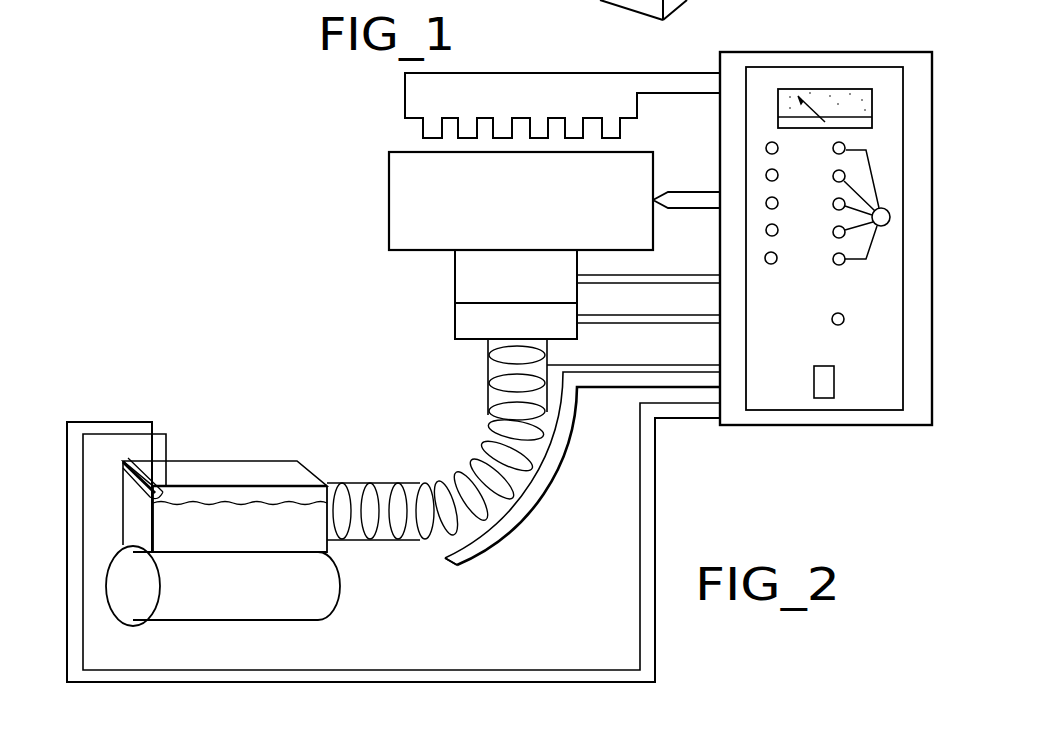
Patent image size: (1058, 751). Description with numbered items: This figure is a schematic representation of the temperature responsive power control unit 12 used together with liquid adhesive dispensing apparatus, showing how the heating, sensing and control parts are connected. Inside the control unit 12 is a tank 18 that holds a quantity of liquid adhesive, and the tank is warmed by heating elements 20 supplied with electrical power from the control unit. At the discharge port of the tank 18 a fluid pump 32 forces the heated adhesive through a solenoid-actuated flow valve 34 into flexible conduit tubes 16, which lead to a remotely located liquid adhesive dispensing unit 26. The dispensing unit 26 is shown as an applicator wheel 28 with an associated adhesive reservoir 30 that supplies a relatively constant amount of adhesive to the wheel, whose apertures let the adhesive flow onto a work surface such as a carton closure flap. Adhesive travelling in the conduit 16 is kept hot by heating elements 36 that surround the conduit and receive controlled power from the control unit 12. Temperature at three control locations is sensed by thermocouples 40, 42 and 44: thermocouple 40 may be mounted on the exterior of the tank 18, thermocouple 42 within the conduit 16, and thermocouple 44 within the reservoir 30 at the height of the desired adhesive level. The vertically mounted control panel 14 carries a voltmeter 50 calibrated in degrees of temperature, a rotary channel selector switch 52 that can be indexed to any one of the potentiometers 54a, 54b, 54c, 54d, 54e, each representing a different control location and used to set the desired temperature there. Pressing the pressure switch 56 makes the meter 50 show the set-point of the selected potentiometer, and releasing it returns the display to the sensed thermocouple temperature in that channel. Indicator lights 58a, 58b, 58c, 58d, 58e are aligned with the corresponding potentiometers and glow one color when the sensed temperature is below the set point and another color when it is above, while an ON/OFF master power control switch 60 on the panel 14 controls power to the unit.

The temperature responsive power control unit 12 is at (938, 101).
The control panel 14 is at (764, 90).
The flexible conduit tubes 16 is at (432, 478).
The tank 18 is at (389, 205).
The heating elements 20 is at (405, 88).
The liquid adhesive dispensing unit 26 is at (188, 432).
The applicator wheel 28 is at (323, 588).
The adhesive reservoir 30 is at (236, 468).
The fluid pump 32 is at (455, 285).
The solenoid-actuated flow valve 34 is at (455, 326).
The heating elements 36 is at (532, 474).
The thermocouple 40 is at (657, 210).
The thermocouple 42 is at (455, 580).
The thermocouple 44 is at (146, 492).
The voltmeter 50 is at (846, 89).
The rotary channel selector switch 52 is at (890, 216).
The potentiometer 54a is at (846, 148).
The potentiometer 54b is at (832, 177).
The potentiometer 54c is at (833, 206).
The potentiometer 54d is at (833, 236).
The potentiometer 54e is at (841, 265).
The pressure switch 56 is at (843, 326).
The indicator light 58a is at (766, 146).
The indicator light 58b is at (766, 174).
The indicator light 58c is at (766, 205).
The indicator light 58d is at (767, 236).
The indicator light 58e is at (776, 264).
The ON/OFF master power control switch 60 is at (814, 378).